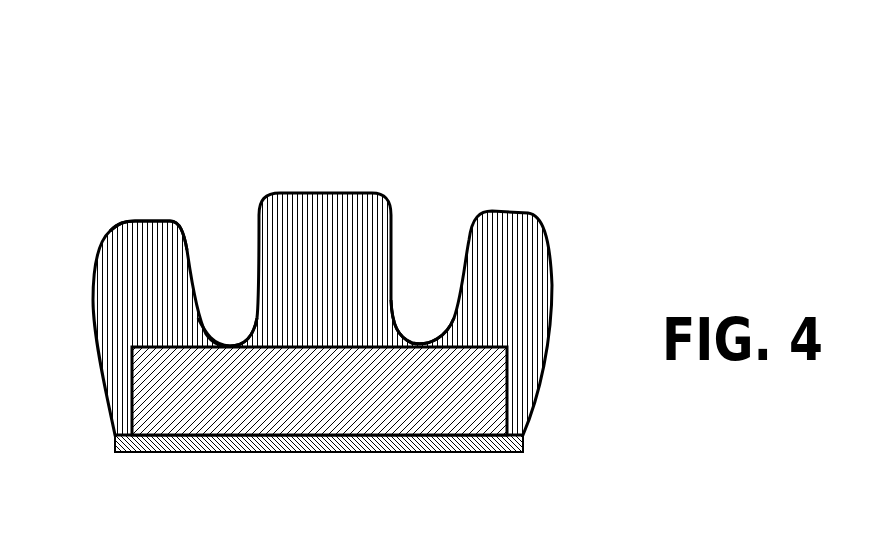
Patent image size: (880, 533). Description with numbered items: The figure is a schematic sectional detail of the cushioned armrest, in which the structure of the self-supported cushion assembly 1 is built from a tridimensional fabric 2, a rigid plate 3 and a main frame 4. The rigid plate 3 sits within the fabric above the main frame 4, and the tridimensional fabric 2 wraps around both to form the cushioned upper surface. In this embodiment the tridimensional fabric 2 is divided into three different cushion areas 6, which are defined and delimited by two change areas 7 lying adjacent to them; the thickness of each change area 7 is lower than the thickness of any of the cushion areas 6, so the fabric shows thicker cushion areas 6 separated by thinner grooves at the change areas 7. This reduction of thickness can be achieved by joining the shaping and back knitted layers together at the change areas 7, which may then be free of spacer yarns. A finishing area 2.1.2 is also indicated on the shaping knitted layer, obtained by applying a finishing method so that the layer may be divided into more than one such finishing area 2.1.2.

The self-supported cushion assembly 1 is at (286, 275).
The tridimensional fabric 2 is at (90, 315).
The finishing area 2.1.2 is at (135, 221).
The rigid plate 3 is at (450, 420).
The main frame 4 is at (197, 452).
The cushion areas 6 is at (500, 242).
The change areas 7 is at (398, 358).